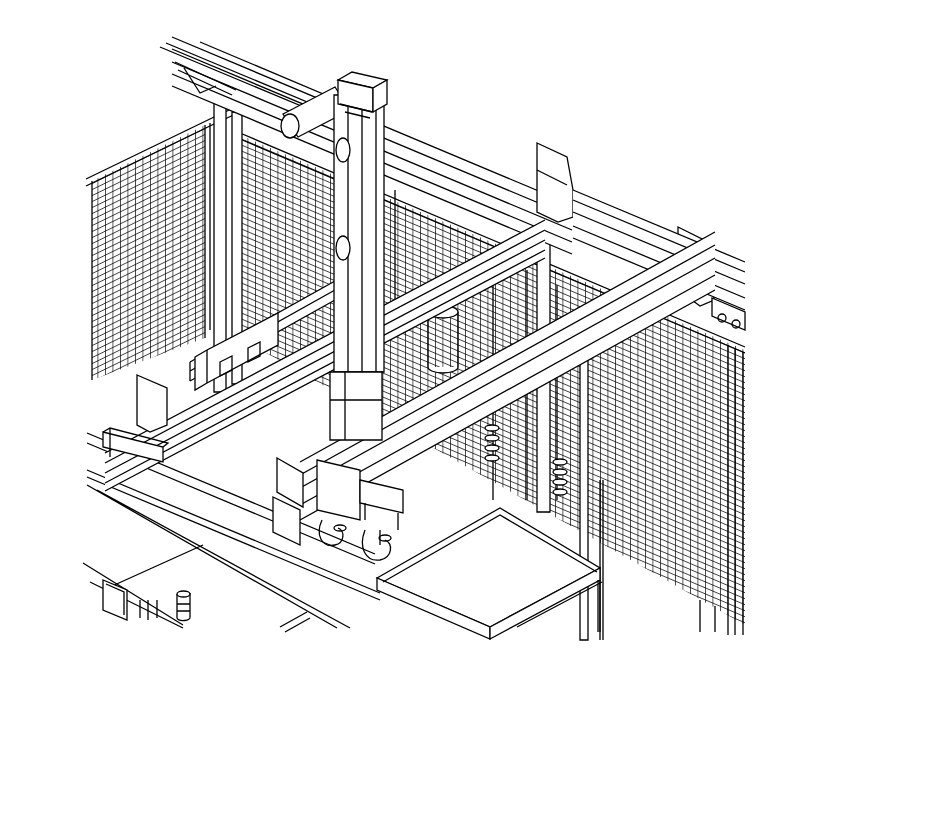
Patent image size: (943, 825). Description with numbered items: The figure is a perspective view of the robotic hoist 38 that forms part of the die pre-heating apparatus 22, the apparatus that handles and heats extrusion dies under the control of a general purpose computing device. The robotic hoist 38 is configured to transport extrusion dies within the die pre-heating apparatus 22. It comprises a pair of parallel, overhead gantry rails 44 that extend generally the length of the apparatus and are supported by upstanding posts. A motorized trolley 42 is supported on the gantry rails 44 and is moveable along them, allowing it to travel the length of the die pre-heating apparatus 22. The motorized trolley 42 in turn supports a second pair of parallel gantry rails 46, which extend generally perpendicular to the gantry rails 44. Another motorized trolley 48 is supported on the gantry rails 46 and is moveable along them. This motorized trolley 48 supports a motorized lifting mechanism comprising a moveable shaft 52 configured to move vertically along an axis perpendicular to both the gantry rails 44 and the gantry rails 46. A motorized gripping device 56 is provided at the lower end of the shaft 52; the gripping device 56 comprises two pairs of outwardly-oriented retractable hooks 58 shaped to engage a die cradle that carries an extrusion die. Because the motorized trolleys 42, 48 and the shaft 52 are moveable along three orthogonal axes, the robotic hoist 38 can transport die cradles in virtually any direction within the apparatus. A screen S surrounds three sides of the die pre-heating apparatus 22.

The die pre-heating apparatus 22 is at (650, 128).
The robotic hoist 38 is at (442, 138).
The motorized trolley 42 is at (656, 262).
The gantry rails 44 is at (290, 72).
The gantry rails 46 is at (523, 193).
The motorized trolley 48 is at (327, 373).
The moveable shaft 52 is at (350, 183).
The motorized gripping device 56 is at (416, 518).
The retractable hooks 58 is at (358, 540).
The screen S is at (722, 560).